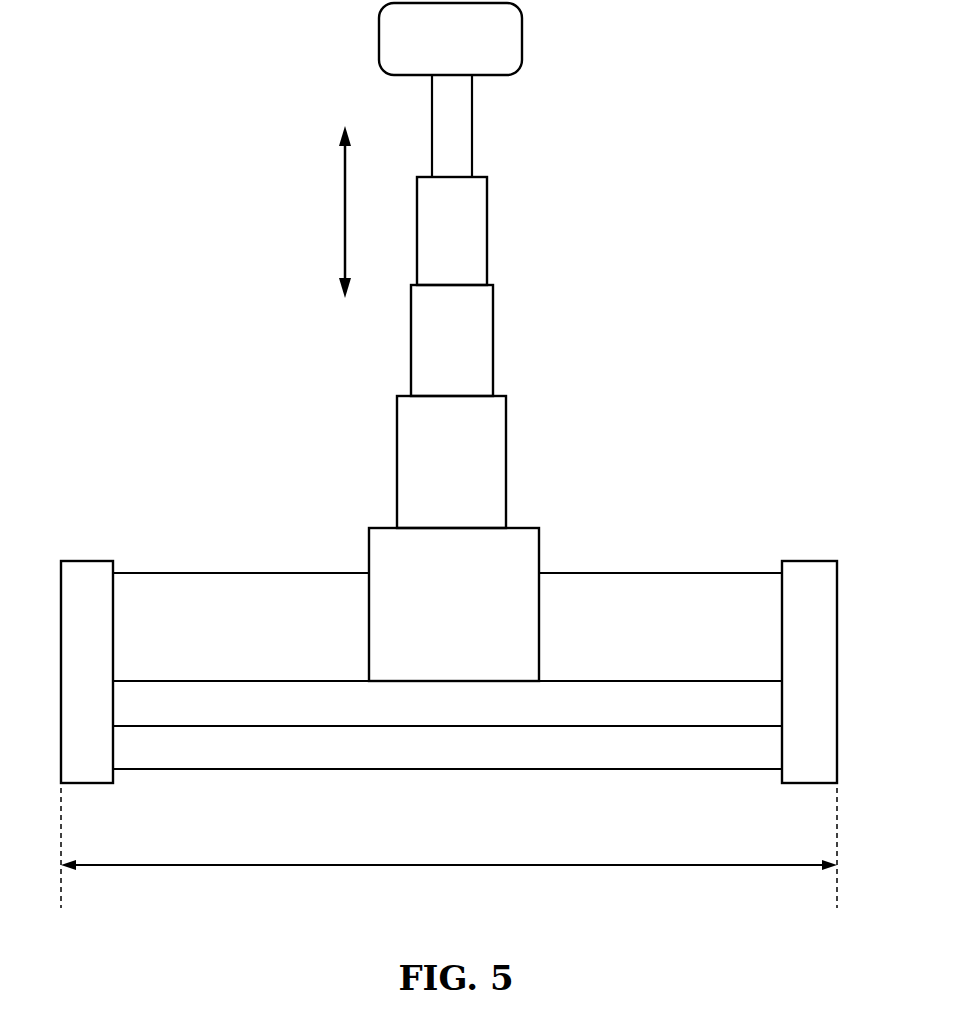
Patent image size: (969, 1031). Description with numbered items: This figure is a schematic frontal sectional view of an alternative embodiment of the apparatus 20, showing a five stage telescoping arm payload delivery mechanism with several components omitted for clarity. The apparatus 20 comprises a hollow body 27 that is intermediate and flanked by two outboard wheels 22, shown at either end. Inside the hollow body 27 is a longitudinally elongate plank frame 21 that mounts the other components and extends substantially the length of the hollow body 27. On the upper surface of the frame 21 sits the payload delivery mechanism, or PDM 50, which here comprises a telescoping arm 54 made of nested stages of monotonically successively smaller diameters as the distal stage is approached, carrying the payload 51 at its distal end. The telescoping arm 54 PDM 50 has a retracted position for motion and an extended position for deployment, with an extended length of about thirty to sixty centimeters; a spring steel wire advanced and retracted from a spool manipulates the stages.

The apparatus 20 is at (695, 288).
The plank frame 21 is at (439, 715).
The outboard wheels 22 is at (90, 572).
The hollow body 27 is at (438, 849).
The payload delivery mechanism 50 is at (530, 527).
The payload 51 is at (437, 50).
The telescoping arm 54 is at (439, 244).